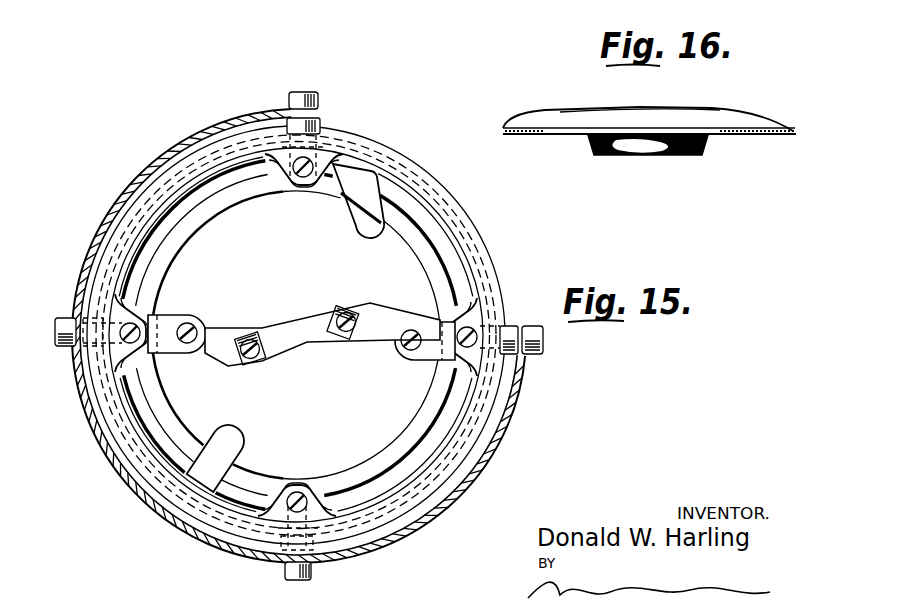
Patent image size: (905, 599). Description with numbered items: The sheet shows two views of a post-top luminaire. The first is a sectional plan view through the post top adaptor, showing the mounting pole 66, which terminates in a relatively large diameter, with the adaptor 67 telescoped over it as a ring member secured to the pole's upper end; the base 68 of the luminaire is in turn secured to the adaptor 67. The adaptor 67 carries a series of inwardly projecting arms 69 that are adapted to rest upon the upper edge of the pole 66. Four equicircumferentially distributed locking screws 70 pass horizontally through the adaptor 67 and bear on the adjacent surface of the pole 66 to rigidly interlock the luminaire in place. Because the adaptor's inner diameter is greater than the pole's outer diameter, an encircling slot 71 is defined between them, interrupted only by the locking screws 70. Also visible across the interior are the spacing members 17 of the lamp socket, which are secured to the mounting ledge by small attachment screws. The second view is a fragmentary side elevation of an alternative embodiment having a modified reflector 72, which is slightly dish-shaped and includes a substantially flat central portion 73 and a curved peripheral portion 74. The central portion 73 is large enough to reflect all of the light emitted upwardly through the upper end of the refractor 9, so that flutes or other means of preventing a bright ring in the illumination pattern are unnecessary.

In FIG. 15, the spacing members 17 is at (337, 317).
In FIG. 15, the mounting pole 66 is at (223, 208).
In FIG. 15, the adaptor 67 is at (397, 156).
In FIG. 15, the base 68 is at (498, 452).
In FIG. 15, the inwardly projecting arms 69 is at (374, 242).
In FIG. 15, the locking screws 70 is at (319, 102).
In FIG. 15, the encircling slot 71 is at (164, 233).
In FIG. 16, the reflector 72 is at (722, 112).
In FIG. 16, the central portion 73 is at (612, 112).
In FIG. 16, the peripheral portion 74 is at (516, 124).
In FIG. 16, the refractor 9 is at (590, 143).